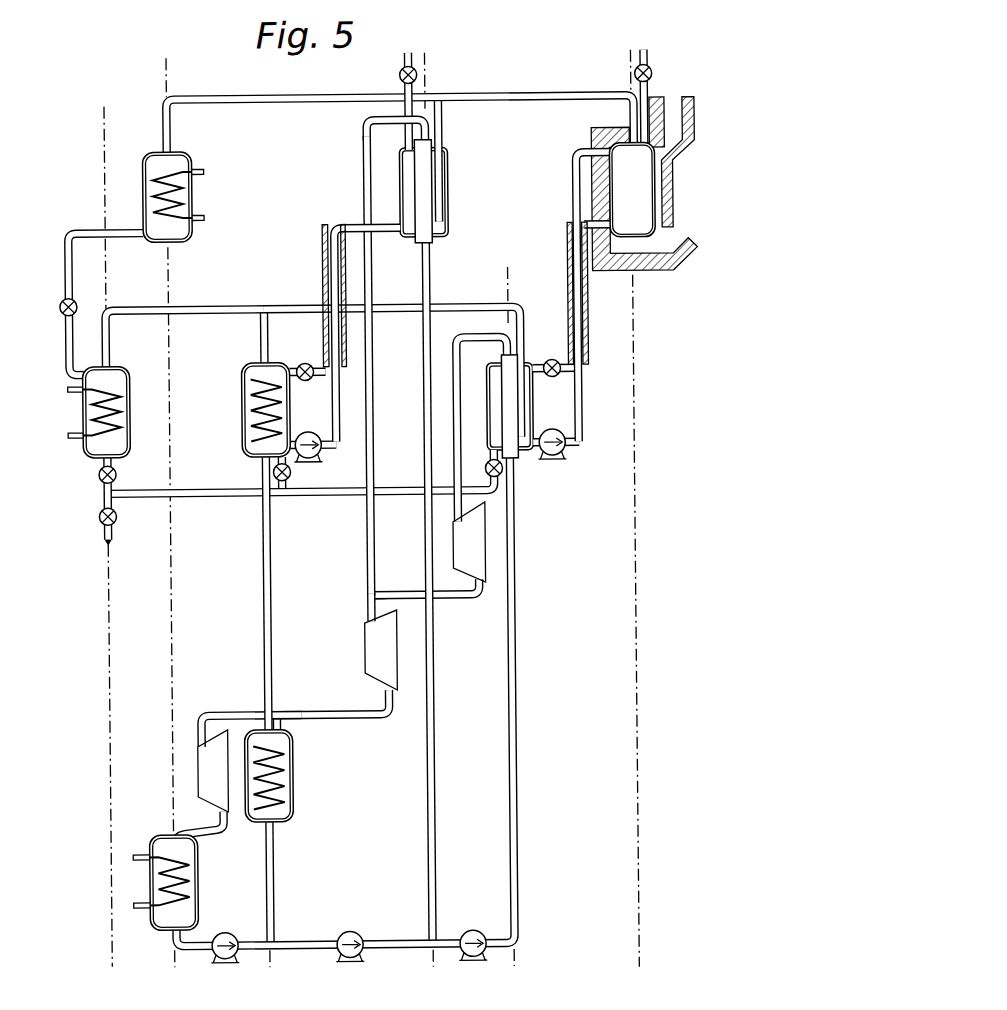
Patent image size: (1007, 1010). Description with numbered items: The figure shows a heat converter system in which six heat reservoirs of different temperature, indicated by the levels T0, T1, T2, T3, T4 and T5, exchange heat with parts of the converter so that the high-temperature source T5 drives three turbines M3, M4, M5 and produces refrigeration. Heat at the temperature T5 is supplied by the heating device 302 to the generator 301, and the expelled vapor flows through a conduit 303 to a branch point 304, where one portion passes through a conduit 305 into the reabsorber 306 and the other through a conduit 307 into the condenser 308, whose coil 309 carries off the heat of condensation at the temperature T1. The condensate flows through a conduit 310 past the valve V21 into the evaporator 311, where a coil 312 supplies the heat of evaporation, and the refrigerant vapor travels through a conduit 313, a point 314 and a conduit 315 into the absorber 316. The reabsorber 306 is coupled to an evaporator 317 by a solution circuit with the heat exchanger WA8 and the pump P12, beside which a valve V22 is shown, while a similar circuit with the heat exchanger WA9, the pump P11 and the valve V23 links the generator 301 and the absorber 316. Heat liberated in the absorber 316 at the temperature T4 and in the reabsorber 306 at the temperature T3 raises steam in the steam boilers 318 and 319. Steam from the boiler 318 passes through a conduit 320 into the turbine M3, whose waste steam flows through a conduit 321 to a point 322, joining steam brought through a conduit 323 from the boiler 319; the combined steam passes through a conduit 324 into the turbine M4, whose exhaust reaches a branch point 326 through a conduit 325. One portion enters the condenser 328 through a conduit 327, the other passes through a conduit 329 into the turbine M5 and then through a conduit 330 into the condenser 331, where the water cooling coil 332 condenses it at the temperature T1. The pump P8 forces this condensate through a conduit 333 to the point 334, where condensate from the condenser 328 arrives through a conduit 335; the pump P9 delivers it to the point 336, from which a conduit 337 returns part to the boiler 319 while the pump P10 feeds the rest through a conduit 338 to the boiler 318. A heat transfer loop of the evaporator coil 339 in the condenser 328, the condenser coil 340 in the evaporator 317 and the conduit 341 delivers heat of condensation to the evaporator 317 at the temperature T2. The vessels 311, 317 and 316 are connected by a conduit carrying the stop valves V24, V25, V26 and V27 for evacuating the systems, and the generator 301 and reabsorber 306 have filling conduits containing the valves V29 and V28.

The generator 301 is at (620, 177).
The heating device 302 is at (650, 255).
The conduit 303 is at (511, 96).
The branch point 304 is at (446, 93).
The conduit 305 is at (446, 120).
The reabsorber 306 is at (451, 176).
The conduit 307 is at (312, 98).
The condenser 308 is at (196, 156).
The cooling coil 309 is at (186, 196).
The conduit 310 is at (116, 230).
The evaporator 311 is at (129, 382).
The coil 312 is at (123, 415).
The conduit 313 is at (207, 308).
The point 314 is at (268, 311).
The conduit 315 is at (452, 308).
The absorber 316 is at (534, 408).
The evaporator 317 is at (243, 396).
The steam boiler 318 is at (516, 458).
The steam boiler 319 is at (430, 212).
The conduit 320 is at (454, 408).
The waste steam conduit 321 is at (391, 593).
The point 322 is at (371, 595).
The conduit 323 is at (375, 523).
The conduit 324 is at (364, 613).
The conduit 325 is at (347, 718).
The branch point 326 is at (285, 712).
The conduit 327 is at (280, 729).
The condenser 328 is at (293, 759).
The conduit 329 is at (235, 713).
The conduit 330 is at (207, 826).
The condenser 331 is at (195, 868).
The water cooling coil 332 is at (189, 886).
The conduit 333 is at (244, 938).
The point 334 is at (276, 942).
The conduit 335 is at (277, 874).
The point 336 is at (426, 940).
The conduit 337 is at (434, 777).
The conduit 338 is at (515, 734).
The evaporator coil 339 is at (280, 781).
The condenser coil 340 is at (244, 434).
The conduit 341 is at (261, 589).
The valve V21 is at (83, 303).
The valve V22 is at (307, 362).
The valve V23 is at (555, 358).
The stop valve V24 is at (123, 501).
The stop valve V25 is at (295, 474).
The stop valve V26 is at (481, 472).
The stop valve V27 is at (122, 518).
The valve V28 is at (394, 101).
The valve V29 is at (657, 96).
The pump P8 is at (225, 962).
The pump P9 is at (350, 961).
The pump P10 is at (473, 961).
The pump P11 is at (559, 464).
The pump P12 is at (313, 429).
The heat exchanger WA8 is at (343, 333).
The heat exchanger WA9 is at (571, 297).
The turbine M3 is at (459, 542).
The turbine of the medium pressure stage M4 is at (393, 650).
The turbine of the lowest pressure stage M5 is at (200, 771).
The temperature line T0 is at (107, 555).
The temperature T1 is at (170, 530).
The temperature T2 is at (270, 976).
The temperature T3 is at (428, 526).
The temperature T4 is at (511, 633).
The temperature T5 is at (635, 523).